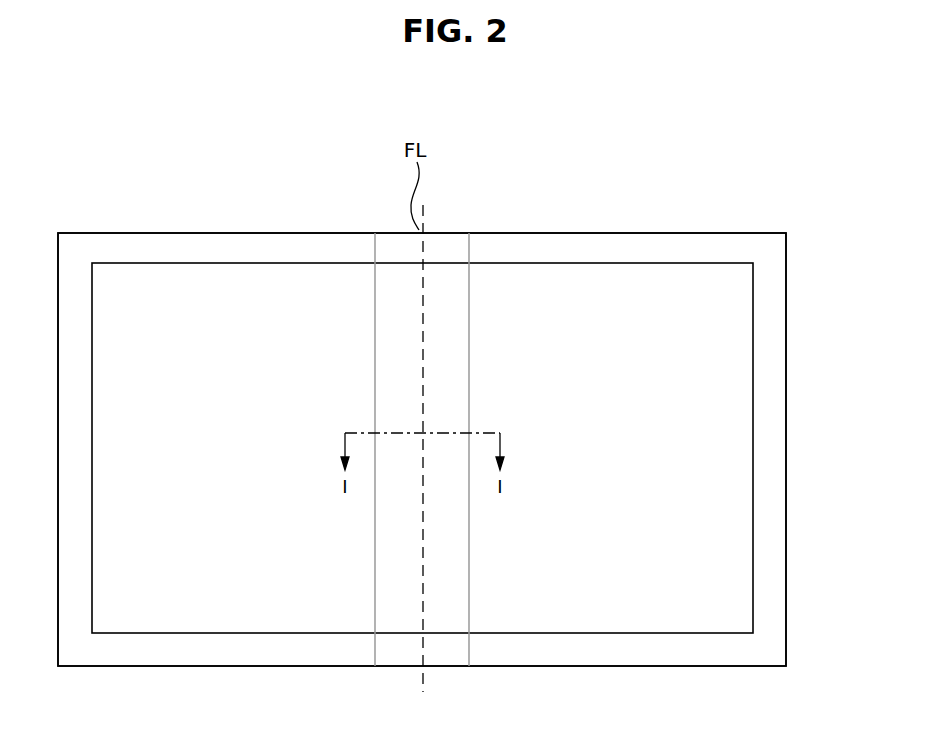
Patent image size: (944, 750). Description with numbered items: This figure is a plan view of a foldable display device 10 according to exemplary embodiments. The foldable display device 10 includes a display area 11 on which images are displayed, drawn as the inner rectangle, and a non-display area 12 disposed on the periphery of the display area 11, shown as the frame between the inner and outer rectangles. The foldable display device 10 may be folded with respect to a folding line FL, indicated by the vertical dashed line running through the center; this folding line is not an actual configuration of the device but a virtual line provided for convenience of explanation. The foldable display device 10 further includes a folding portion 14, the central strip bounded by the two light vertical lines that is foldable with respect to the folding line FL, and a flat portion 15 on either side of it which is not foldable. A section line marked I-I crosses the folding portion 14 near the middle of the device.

The foldable display device 10 is at (566, 178).
The display area 11 is at (753, 502).
The non-display area 12 is at (770, 561).
The folding portion 14 is at (398, 605).
The flat portion 15 is at (214, 605).